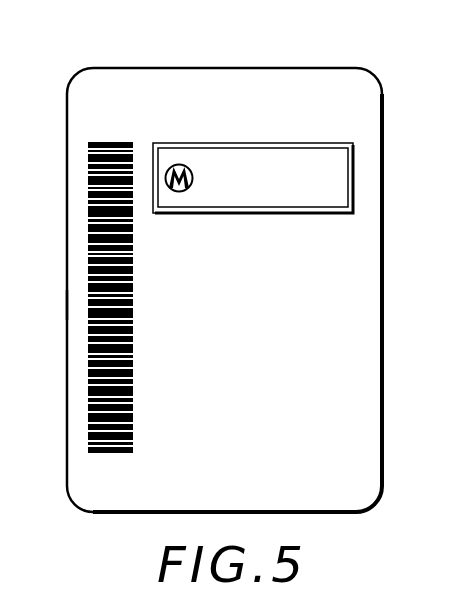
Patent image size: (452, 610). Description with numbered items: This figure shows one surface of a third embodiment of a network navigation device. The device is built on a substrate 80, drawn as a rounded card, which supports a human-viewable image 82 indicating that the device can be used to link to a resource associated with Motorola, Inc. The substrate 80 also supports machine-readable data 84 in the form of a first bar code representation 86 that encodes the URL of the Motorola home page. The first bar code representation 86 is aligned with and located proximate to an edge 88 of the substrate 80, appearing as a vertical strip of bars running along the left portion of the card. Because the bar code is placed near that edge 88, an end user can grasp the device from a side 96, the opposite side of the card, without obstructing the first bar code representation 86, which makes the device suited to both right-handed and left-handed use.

The substrate 80 is at (196, 68).
The human-viewable image 82 is at (322, 213).
The machine-readable data 84 is at (92, 183).
The first bar code representation 86 is at (90, 239).
The edge 88 is at (67, 305).
The side 96 is at (383, 256).